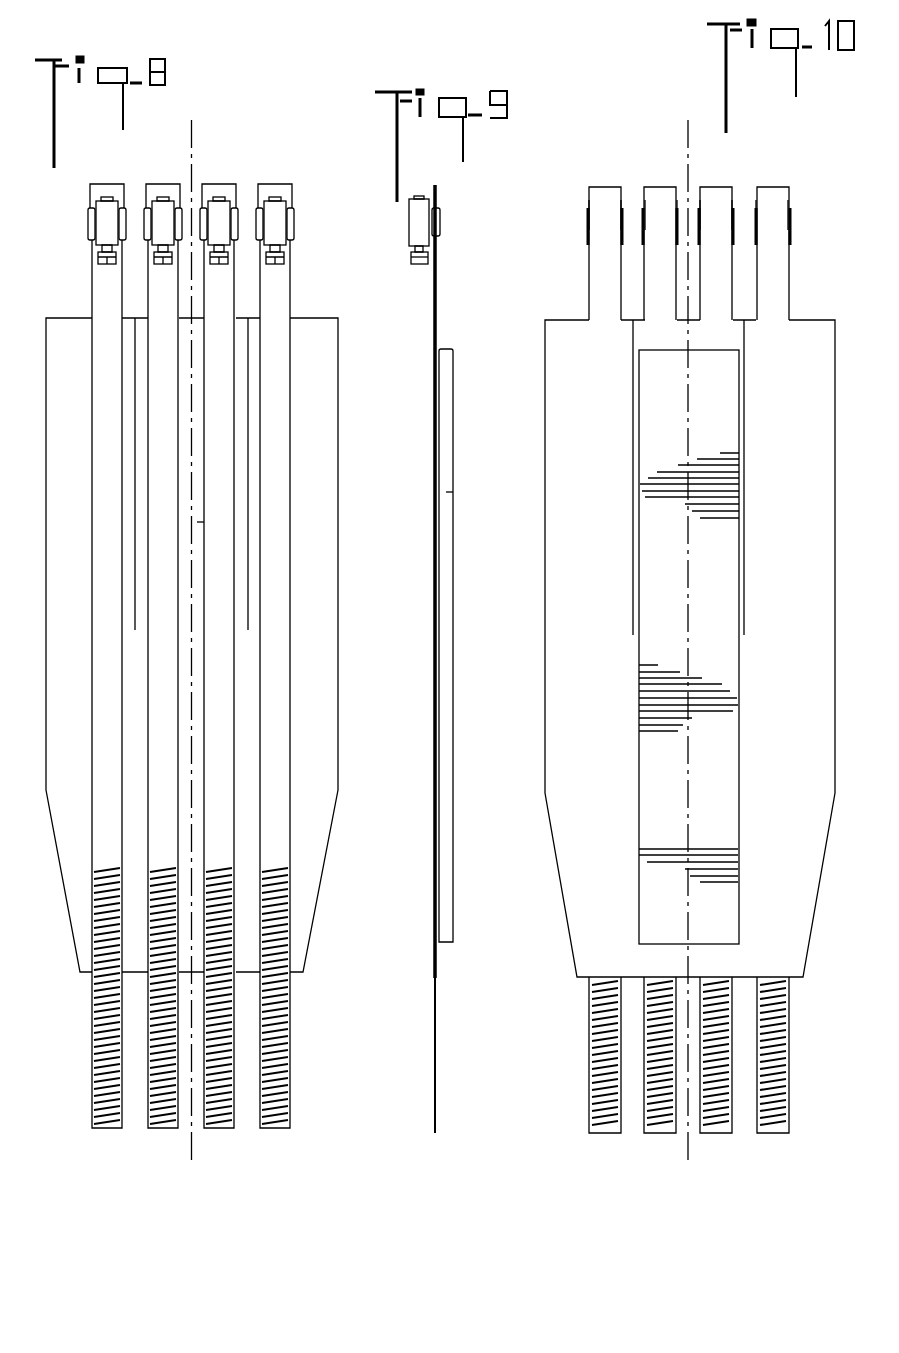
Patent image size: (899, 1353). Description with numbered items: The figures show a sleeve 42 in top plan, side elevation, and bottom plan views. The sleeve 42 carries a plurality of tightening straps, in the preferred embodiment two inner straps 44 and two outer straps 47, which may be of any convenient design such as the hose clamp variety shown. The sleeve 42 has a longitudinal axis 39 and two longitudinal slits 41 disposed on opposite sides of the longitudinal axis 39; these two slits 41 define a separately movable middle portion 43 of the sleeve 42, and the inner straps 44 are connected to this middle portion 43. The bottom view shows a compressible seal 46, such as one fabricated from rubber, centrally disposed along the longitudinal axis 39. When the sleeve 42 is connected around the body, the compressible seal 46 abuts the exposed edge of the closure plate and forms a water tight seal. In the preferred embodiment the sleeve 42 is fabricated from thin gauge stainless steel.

In FIG. 8, the longitudinal axis 39 is at (193, 155).
In FIG. 10, the longitudinal axis 39 is at (688, 148).
In FIG. 8, the longitudinal slits 41 is at (135, 354).
In FIG. 10, the longitudinal slits 41 is at (745, 365).
In FIG. 8, the sleeve 42 is at (312, 318).
In FIG. 9, the sleeve 42 is at (437, 338).
In FIG. 10, the sleeve 42 is at (563, 728).
In FIG. 8, the middle portion 43 is at (200, 522).
In FIG. 10, the middle portion 43 is at (676, 337).
In FIG. 8, the inner straps 44 is at (162, 185).
In FIG. 9, the inner straps 44 is at (424, 230).
In FIG. 10, the inner straps 44 is at (652, 187).
In FIG. 9, the compressible seal 46 is at (447, 492).
In FIG. 10, the compressible seal 46 is at (655, 533).
In FIG. 8, the outer straps 47 is at (105, 282).
In FIG. 9, the outer straps 47 is at (432, 284).
In FIG. 10, the outer straps 47 is at (600, 267).